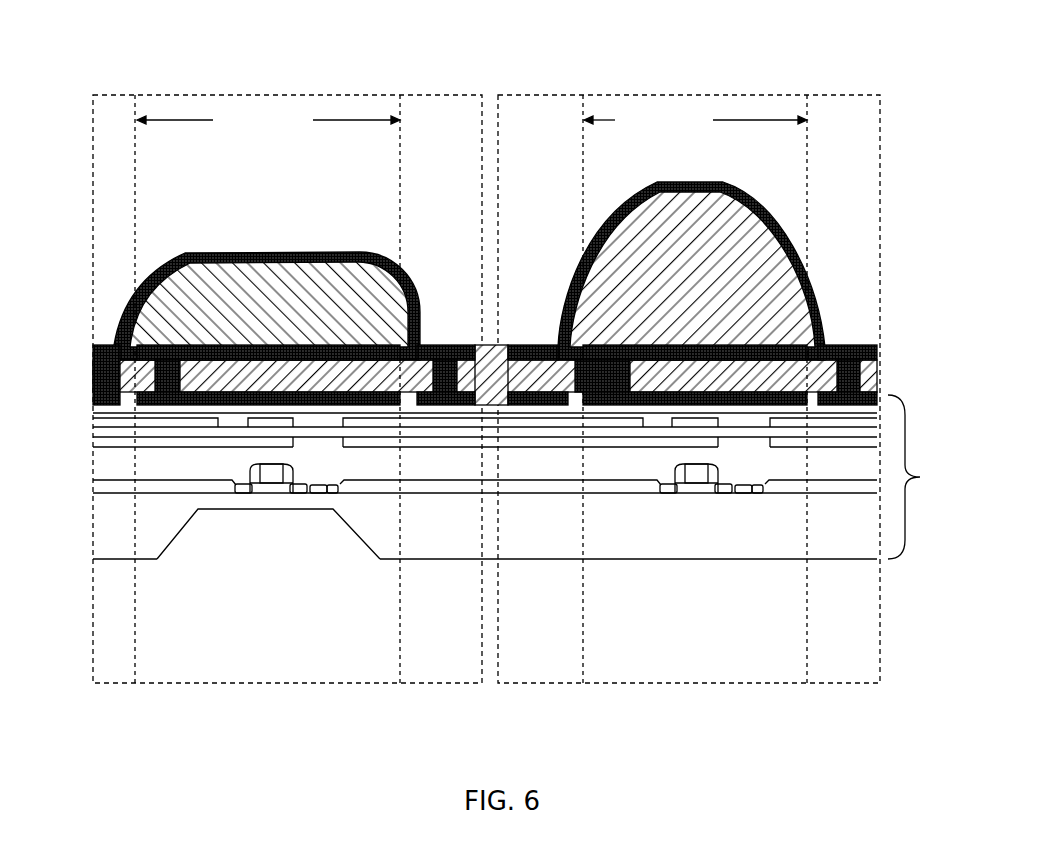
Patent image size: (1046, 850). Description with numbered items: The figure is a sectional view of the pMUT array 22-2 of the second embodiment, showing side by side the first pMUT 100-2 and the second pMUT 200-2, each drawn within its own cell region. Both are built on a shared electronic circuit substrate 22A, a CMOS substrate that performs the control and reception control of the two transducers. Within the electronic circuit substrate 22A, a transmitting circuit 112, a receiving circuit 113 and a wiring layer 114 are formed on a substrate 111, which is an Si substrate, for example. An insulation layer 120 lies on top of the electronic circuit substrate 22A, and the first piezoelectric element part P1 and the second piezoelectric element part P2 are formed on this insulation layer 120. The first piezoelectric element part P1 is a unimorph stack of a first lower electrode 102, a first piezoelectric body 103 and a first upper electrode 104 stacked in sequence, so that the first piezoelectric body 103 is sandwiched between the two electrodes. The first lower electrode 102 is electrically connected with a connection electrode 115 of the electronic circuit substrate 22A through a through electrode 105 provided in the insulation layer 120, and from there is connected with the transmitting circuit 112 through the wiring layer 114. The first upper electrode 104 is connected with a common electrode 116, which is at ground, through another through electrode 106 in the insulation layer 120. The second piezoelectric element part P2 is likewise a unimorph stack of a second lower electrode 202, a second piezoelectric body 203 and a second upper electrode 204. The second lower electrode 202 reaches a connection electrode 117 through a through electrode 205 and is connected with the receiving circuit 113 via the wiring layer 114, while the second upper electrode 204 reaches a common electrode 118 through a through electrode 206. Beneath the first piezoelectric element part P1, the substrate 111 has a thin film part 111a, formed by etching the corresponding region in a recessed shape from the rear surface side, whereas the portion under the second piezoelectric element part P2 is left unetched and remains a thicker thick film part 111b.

The first pMUT 100-2 is at (345, 93).
The second pMUT 200-2 is at (610, 93).
The pMUT array 22-2 is at (810, 76).
The electronic circuit substrate 22A is at (527, 477).
The first piezoelectric element part P1 is at (414, 262).
The second piezoelectric element part P2 is at (821, 262).
The first lower electrode 102 is at (313, 357).
The first piezoelectric body 103 is at (255, 280).
The first upper electrode 104 is at (195, 253).
The through electrode 105 is at (160, 373).
The through electrode 106 is at (447, 377).
The insulation layer 120 is at (872, 372).
The substrate 111 is at (545, 560).
The thin film part 111a is at (218, 512).
The thick film part 111b is at (630, 551).
The transmitting circuit 112 is at (264, 483).
The receiving circuit 113 is at (695, 483).
The wiring layer 114 is at (401, 442).
The connection electrode 115 is at (337, 405).
The common electrode 116 is at (447, 405).
The connection electrode 117 is at (750, 405).
The common electrode 118 is at (843, 405).
The second lower electrode 202 is at (703, 342).
The second piezoelectric body 203 is at (637, 195).
The second upper electrode 204 is at (577, 265).
The through electrode 205 is at (610, 373).
The through electrode 206 is at (853, 377).